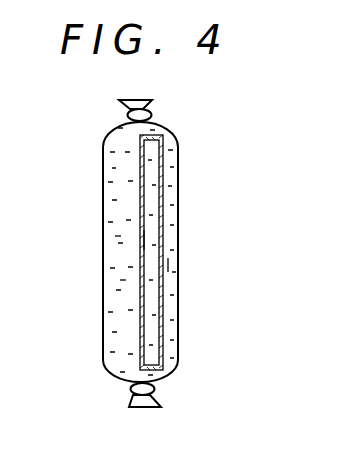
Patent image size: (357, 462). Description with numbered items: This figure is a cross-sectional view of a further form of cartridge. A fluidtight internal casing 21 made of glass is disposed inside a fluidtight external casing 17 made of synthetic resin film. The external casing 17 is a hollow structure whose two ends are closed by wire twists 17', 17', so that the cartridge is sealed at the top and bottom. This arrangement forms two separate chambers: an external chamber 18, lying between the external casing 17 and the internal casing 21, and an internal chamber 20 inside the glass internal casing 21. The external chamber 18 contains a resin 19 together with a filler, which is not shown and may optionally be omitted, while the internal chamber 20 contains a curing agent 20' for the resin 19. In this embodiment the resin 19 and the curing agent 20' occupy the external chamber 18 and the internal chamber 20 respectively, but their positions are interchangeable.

The external casing 17 is at (109, 252).
The wire twists 17' is at (174, 252).
The external chamber 18 is at (121, 238).
The resin 19 is at (125, 278).
The internal chamber 20 is at (193, 252).
The curing agent 20' is at (196, 236).
The internal casing 21 is at (170, 265).